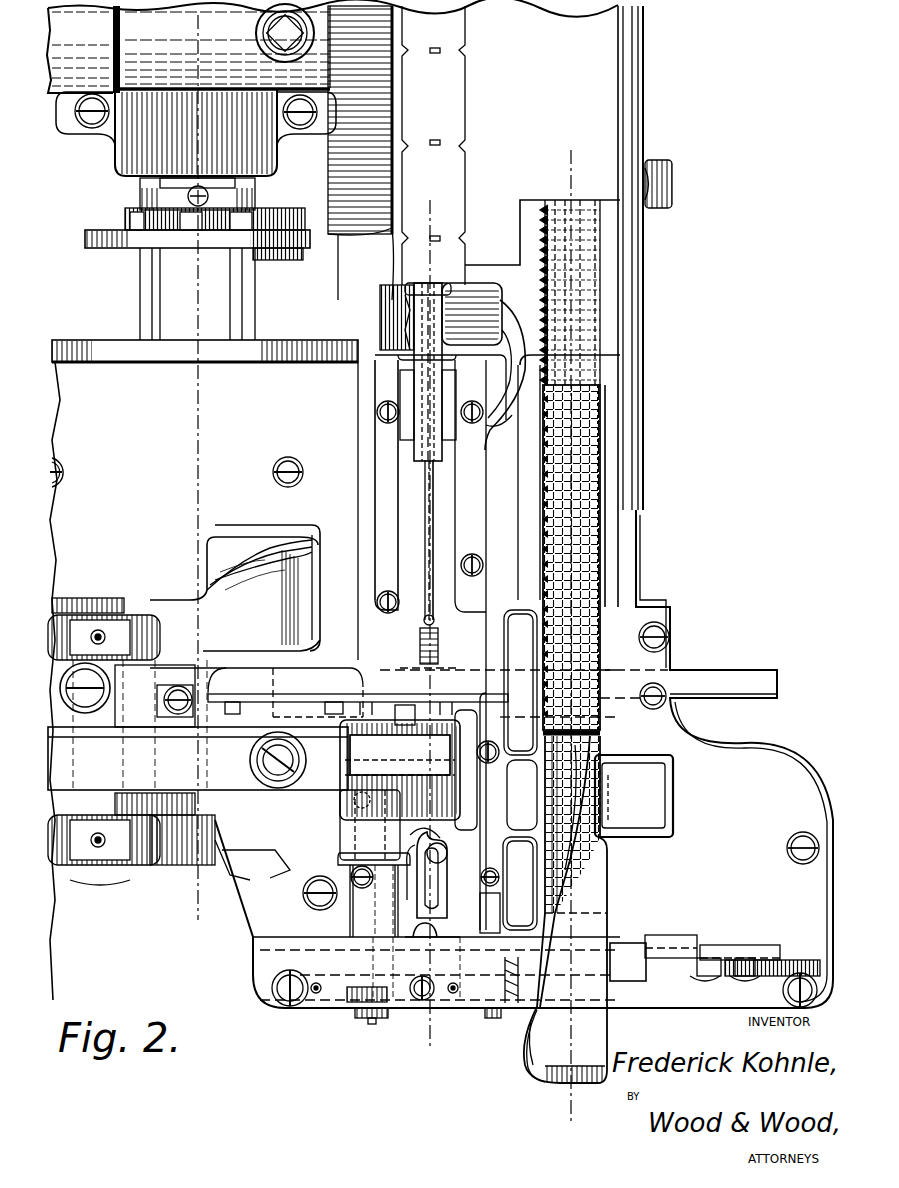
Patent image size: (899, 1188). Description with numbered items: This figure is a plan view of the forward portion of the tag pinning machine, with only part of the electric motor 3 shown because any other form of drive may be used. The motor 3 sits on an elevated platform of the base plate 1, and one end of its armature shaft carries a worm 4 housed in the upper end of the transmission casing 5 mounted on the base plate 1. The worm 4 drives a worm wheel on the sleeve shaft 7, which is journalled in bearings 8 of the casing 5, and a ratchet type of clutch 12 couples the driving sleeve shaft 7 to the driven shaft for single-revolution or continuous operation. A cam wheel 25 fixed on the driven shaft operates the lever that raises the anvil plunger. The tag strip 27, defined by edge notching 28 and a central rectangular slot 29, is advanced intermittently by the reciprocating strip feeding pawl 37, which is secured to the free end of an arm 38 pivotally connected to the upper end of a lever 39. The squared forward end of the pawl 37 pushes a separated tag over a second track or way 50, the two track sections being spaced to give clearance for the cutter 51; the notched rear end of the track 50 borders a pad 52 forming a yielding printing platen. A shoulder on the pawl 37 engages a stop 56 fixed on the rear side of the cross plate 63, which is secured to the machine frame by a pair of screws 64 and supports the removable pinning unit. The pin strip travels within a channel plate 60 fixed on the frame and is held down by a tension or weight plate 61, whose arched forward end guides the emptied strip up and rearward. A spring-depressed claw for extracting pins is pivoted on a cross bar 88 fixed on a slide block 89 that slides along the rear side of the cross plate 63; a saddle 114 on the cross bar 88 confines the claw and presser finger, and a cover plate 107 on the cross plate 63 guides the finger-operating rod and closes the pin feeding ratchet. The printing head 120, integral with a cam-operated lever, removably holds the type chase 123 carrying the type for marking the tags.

The base plate 1 is at (626, 366).
The electric motor 3 is at (196, 133).
The worm 4 is at (212, 33).
The transmission casing 5 is at (450, 210).
The sleeve shaft 7 is at (150, 179).
The bearings 8 is at (600, 165).
The ratchet type of clutch 12 is at (152, 232).
The cam wheel 25 is at (286, 343).
The tag strip 27 is at (462, 98).
The edge notching 28 is at (467, 50).
The rectangular slot 29 is at (434, 140).
The strip feeding pawl 37 is at (438, 512).
The arm 38 is at (442, 358).
The lever 39 is at (512, 344).
The track or way 50 is at (450, 866).
The cutter 51 is at (420, 697).
The pad 52 is at (385, 920).
The stop 56 is at (417, 923).
The channel plate 60 is at (543, 600).
The tension or weight plate 61 is at (616, 765).
The cross plate 63 is at (690, 1000).
The screws 64 is at (273, 988).
The cross bar 88 is at (724, 945).
The slide block 89 is at (672, 936).
The cover plate 107 is at (340, 1005).
The saddle 114 is at (628, 940).
The printing head 120 is at (408, 767).
The type chase 123 is at (358, 838).